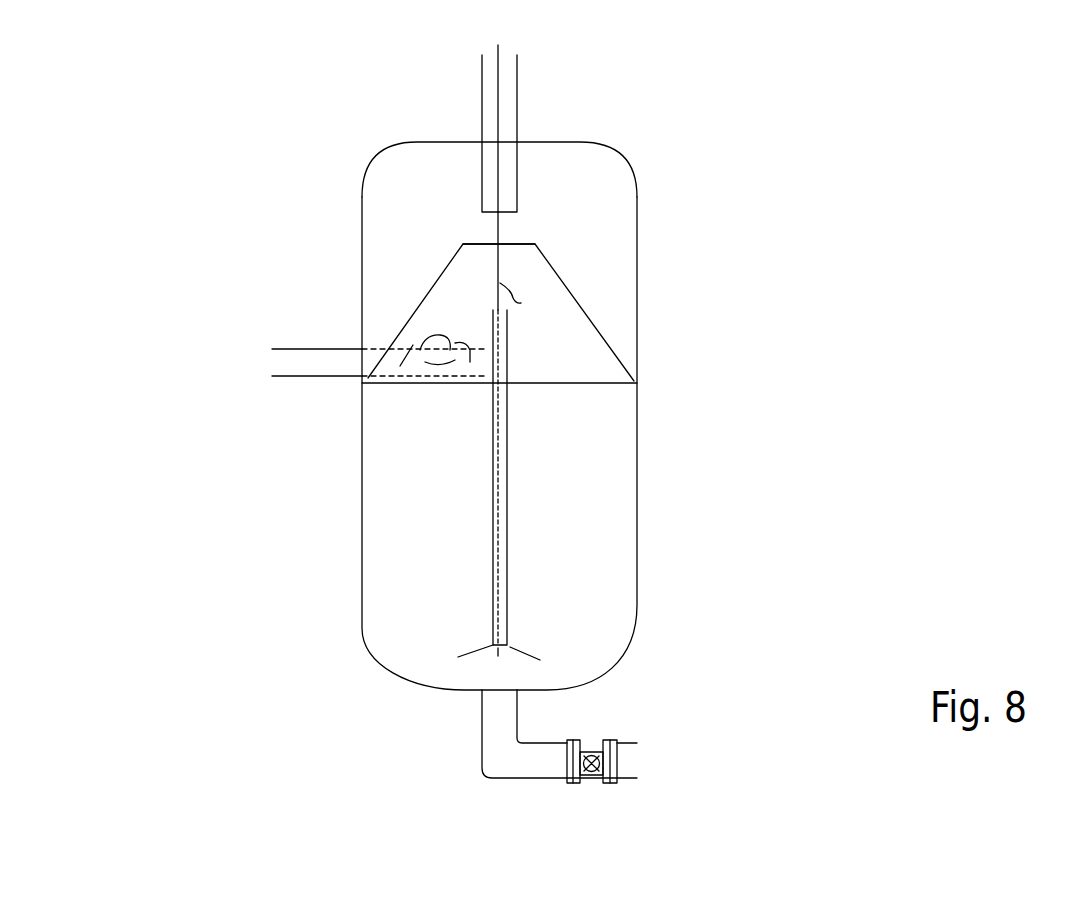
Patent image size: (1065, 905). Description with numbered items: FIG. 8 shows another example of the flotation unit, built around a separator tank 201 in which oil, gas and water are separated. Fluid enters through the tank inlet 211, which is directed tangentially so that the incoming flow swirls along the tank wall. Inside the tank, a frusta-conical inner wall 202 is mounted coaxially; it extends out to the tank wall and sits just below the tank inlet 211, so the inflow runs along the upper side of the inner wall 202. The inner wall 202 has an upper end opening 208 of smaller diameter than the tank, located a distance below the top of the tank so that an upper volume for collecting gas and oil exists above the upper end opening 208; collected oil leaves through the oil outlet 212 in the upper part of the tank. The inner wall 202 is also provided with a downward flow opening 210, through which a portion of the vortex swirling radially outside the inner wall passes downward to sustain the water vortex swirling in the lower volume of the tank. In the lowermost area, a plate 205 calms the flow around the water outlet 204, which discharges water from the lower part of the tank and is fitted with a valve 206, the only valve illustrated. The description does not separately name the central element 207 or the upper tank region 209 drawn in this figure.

The vessel body 201 is at (390, 480).
The inner wall 202 is at (588, 370).
The water outlet 204 is at (532, 787).
The plate 205 is at (537, 643).
The valve 206 is at (590, 743).
The stirrer shaft tube 207 is at (508, 485).
The upper end opening 208 is at (522, 243).
The vessel lid 209 is at (393, 180).
The downward flow opening 210 is at (420, 337).
The tank inlet 211 is at (300, 340).
The oil outlet 212 is at (488, 220).